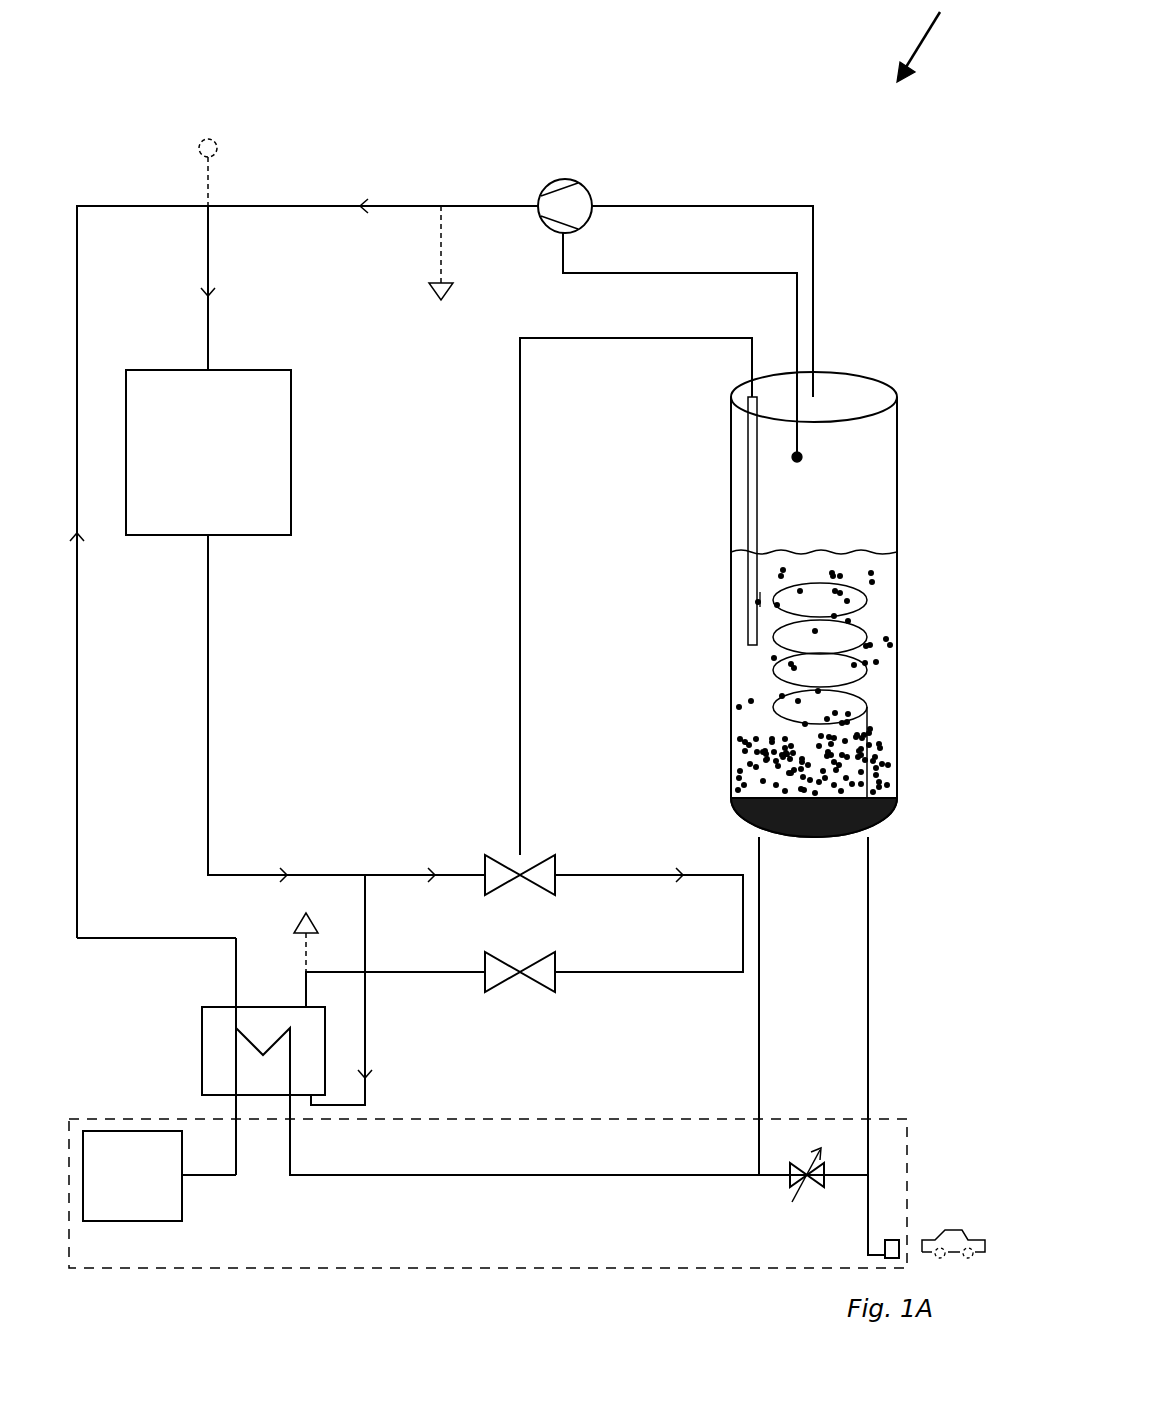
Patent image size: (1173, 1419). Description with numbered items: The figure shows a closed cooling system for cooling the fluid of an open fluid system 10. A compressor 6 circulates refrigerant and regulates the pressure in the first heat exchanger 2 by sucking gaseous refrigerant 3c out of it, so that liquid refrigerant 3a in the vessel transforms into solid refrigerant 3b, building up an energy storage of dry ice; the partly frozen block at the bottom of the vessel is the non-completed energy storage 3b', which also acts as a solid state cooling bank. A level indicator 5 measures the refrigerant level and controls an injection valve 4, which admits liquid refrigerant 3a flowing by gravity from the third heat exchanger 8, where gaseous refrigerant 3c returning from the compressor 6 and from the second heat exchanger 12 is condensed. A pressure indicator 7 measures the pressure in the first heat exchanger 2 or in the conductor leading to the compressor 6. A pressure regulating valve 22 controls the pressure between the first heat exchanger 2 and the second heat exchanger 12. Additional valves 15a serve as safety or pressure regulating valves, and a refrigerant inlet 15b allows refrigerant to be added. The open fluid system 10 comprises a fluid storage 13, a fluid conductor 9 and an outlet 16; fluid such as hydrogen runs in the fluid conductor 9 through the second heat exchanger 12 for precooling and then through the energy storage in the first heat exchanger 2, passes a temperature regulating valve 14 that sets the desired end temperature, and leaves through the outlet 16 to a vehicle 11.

The first heat exchanger 2 is at (897, 455).
The liquid state refrigerant 3a is at (208, 590).
The solid state refrigerant 3b is at (852, 684).
The non-completed energy storage 3b' is at (855, 807).
The gaseous state refrigerant 3c is at (330, 206).
The injection valve 4 is at (487, 858).
The level indicator 5 is at (752, 533).
The compressor 6 is at (553, 183).
The pressure indicator 7 is at (800, 457).
The third heat exchanger 8 is at (170, 370).
The fluid conductor 9 is at (870, 892).
The open fluid system 10 is at (650, 1119).
The vehicle 11 is at (968, 1245).
The second heat exchanger 12 is at (325, 1048).
The fluid storage 13 is at (105, 1131).
The temperature regulating valve 14 is at (790, 1178).
The additional valves 15a is at (446, 292).
The refrigerant inlet 15b is at (208, 138).
The outlet of the open fluid system 16 is at (885, 1240).
The pressure regulating valve 22 is at (555, 990).